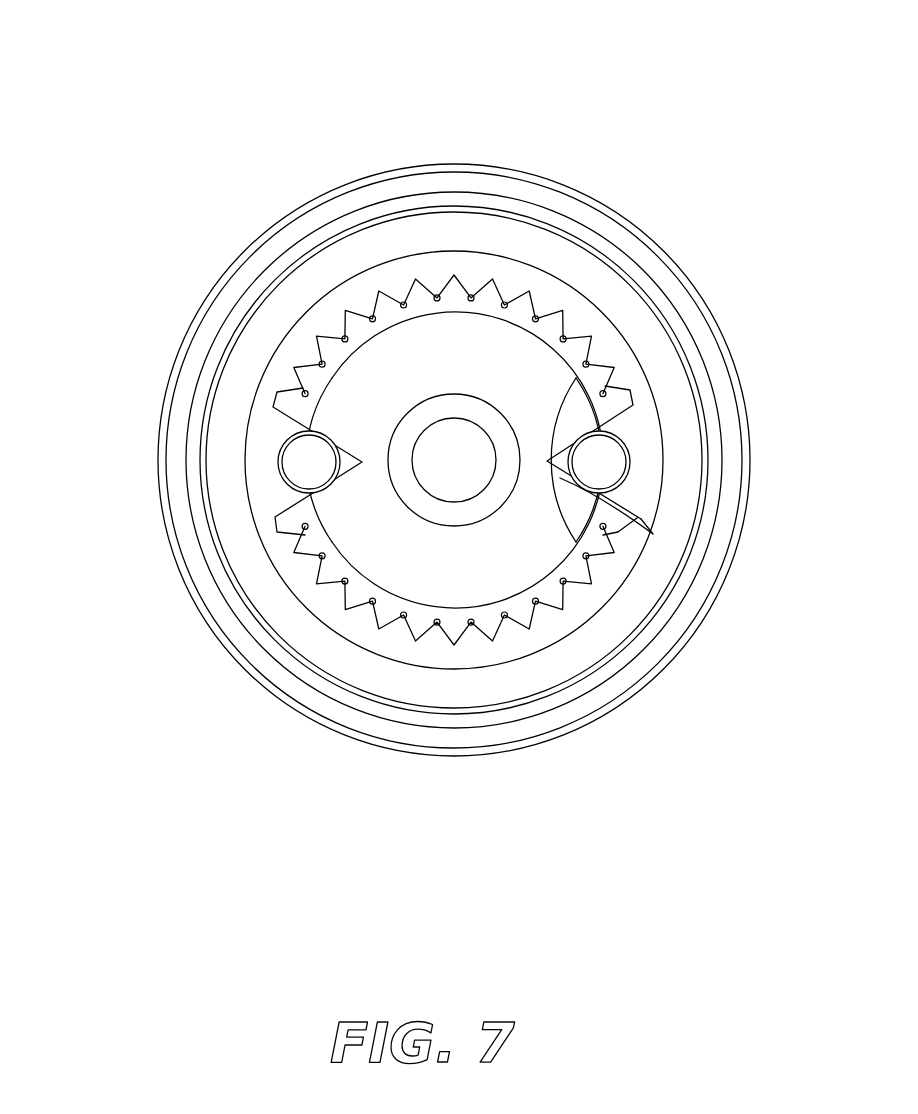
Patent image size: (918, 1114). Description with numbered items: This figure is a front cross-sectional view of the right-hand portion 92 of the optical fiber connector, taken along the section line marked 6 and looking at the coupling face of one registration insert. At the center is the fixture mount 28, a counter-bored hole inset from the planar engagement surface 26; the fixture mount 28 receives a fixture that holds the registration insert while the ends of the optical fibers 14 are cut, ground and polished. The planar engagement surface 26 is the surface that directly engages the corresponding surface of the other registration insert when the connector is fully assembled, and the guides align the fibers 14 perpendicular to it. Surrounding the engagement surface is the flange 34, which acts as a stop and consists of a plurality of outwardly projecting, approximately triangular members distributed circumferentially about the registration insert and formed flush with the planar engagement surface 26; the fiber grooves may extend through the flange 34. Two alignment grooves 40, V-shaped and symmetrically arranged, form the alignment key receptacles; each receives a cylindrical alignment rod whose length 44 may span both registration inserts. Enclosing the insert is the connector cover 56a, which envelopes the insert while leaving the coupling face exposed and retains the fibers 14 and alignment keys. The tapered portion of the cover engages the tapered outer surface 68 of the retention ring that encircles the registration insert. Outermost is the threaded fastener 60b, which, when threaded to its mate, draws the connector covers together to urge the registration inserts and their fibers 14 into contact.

The section line 6- 6 is at (415, 866).
The optical fibers 14 is at (320, 312).
The planar engagement surface 26 is at (542, 426).
The fixture mount 28 is at (507, 508).
The flange 34 is at (553, 292).
The alignment groove 40 is at (567, 480).
The length 44 is at (600, 462).
The connector cover 56a is at (665, 360).
The threaded fastener 60b is at (604, 166).
The tapered outer surface 68 is at (650, 413).
The right-hand portion 92 is at (735, 85).